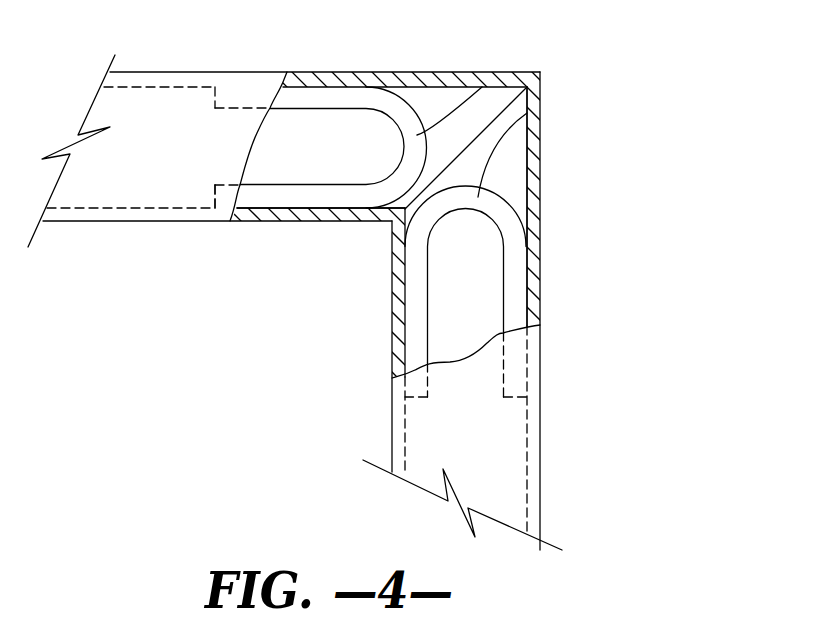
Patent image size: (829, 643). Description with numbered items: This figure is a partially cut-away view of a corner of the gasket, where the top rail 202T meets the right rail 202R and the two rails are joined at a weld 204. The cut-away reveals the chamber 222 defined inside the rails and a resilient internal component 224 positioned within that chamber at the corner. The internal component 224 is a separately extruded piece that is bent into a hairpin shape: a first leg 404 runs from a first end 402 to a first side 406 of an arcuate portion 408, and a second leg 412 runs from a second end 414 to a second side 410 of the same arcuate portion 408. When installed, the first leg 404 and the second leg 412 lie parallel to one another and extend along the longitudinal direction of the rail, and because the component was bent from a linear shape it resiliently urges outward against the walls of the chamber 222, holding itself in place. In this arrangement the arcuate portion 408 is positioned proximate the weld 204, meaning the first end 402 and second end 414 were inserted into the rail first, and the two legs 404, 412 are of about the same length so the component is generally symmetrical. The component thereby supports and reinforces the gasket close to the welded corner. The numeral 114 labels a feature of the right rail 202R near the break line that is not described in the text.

The weld 204 is at (549, 55).
The top rail 202T is at (167, 103).
The right rail 202R is at (503, 460).
The first leg 404 is at (315, 97).
The first side of the arcuate portion 406 is at (377, 98).
The resilient internal component 224 is at (425, 96).
The arcuate portion 408 is at (492, 72).
The second side of the arcuate portion 410 is at (373, 195).
The chamber 222 is at (472, 285).
The second leg 412 is at (307, 197).
The first end 402 is at (407, 398).
The frame member wall 114 is at (512, 400).
The second end 414 is at (215, 190).